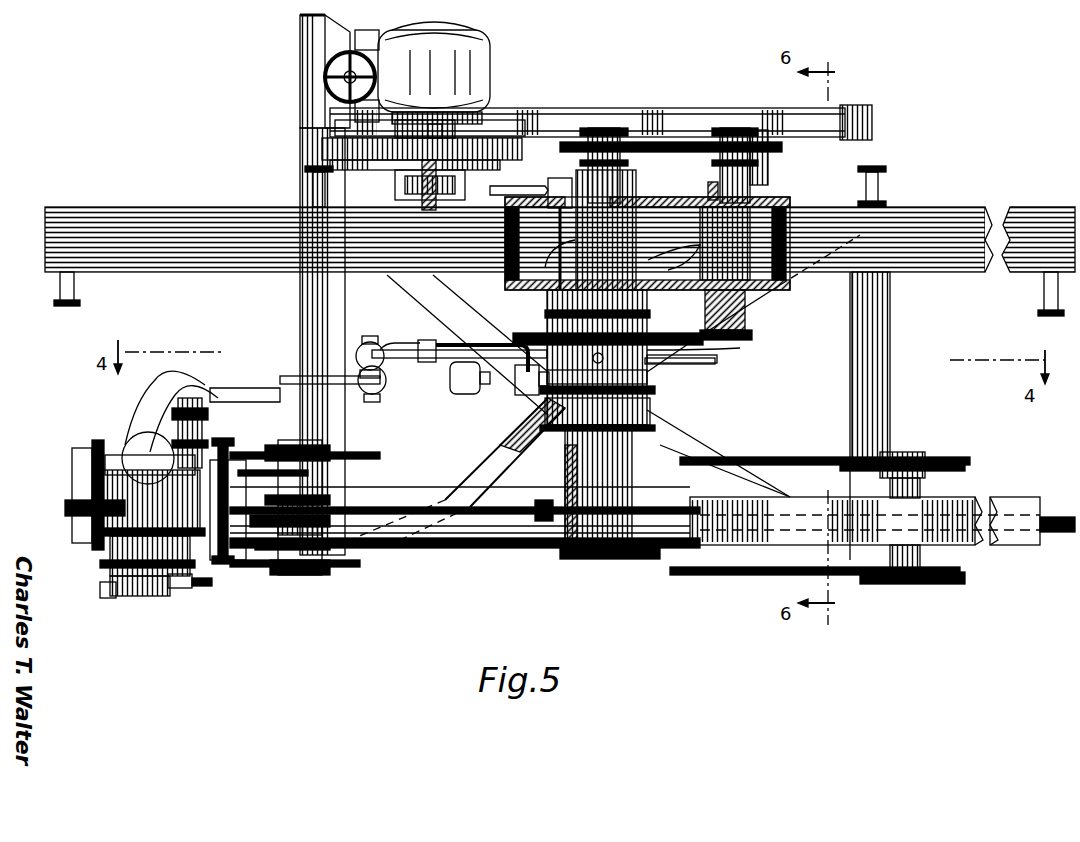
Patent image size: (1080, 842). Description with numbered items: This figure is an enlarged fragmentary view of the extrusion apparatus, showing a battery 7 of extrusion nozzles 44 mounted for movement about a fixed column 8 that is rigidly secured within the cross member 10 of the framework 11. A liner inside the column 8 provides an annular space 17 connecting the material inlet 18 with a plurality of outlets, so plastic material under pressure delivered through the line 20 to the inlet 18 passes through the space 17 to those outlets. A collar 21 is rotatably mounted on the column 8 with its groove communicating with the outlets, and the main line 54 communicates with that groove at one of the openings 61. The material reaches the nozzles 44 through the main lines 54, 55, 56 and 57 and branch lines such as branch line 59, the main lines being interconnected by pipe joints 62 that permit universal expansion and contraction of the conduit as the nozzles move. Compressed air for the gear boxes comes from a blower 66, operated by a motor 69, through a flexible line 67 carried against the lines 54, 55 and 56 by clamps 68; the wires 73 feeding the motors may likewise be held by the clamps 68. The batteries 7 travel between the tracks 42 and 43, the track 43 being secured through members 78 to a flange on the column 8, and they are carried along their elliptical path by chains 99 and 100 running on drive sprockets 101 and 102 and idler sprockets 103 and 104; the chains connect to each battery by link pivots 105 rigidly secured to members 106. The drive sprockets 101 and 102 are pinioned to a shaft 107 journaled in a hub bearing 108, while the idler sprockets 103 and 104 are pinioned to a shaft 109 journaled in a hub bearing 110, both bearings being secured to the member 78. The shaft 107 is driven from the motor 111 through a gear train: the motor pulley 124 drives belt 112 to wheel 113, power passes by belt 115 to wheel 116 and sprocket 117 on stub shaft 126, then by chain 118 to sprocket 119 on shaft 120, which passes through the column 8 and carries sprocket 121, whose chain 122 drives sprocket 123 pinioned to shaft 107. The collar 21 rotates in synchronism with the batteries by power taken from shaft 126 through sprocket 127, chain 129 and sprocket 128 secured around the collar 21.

The battery of nozzles 7 is at (128, 434).
The fixed column 8 is at (625, 470).
The cross member 10 is at (686, 198).
The framework 11 is at (190, 210).
The annular space 17 is at (585, 236).
The material inlet 18 is at (565, 182).
The line 20 is at (495, 188).
The collar 21 is at (648, 330).
The track 42 is at (72, 500).
The track 43 is at (244, 514).
The nozzles 44 is at (148, 596).
The main line 54 is at (400, 358).
The main line 55 is at (305, 376).
The main line 56 is at (255, 410).
The main line 57 is at (200, 448).
The branch line 59 is at (170, 588).
The opening 61 is at (606, 358).
The joint 62 is at (270, 352).
The blower 66 is at (515, 385).
The flexible line 67 is at (490, 345).
The clamp 68 is at (436, 340).
The motor 69 is at (462, 394).
The wires 73 is at (400, 343).
The member 78 is at (495, 470).
The chain 99 is at (755, 457).
The chain 100 is at (685, 574).
The drive sprocket 101 is at (350, 454).
The drive sprocket 102 is at (342, 567).
The idler sprocket 103 is at (962, 462).
The idler sprocket 104 is at (950, 584).
The link pivot 105 is at (232, 446).
The member 106 is at (222, 580).
The shaft 107 is at (300, 440).
The hub bearing 108 is at (310, 473).
The shaft 109 is at (905, 452).
The hub bearing 110 is at (922, 488).
The motor 111 is at (470, 78).
The belt 112 is at (320, 150).
The wheel 113 is at (360, 170).
The belt 115 is at (530, 115).
The wheel 116 is at (875, 110).
The sprocket 117 is at (762, 160).
The chain 118 is at (655, 150).
The sprocket 119 is at (630, 160).
The shaft 120 is at (565, 460).
The sprocket 121 is at (558, 558).
The chain 122 is at (478, 548).
The sprocket 123 is at (352, 548).
The motor pulley 124 is at (395, 132).
The stub shaft 126 is at (750, 195).
The sprocket 127 is at (752, 340).
The sprocket 128 is at (712, 360).
The chain 129 is at (740, 348).